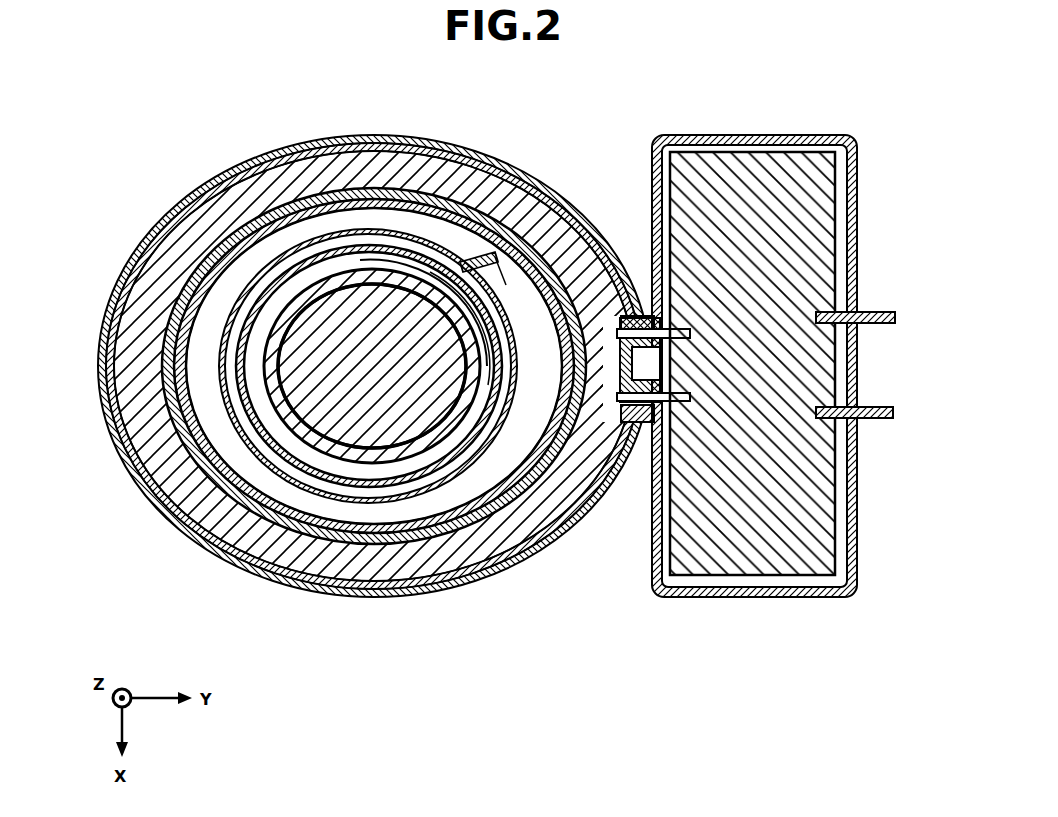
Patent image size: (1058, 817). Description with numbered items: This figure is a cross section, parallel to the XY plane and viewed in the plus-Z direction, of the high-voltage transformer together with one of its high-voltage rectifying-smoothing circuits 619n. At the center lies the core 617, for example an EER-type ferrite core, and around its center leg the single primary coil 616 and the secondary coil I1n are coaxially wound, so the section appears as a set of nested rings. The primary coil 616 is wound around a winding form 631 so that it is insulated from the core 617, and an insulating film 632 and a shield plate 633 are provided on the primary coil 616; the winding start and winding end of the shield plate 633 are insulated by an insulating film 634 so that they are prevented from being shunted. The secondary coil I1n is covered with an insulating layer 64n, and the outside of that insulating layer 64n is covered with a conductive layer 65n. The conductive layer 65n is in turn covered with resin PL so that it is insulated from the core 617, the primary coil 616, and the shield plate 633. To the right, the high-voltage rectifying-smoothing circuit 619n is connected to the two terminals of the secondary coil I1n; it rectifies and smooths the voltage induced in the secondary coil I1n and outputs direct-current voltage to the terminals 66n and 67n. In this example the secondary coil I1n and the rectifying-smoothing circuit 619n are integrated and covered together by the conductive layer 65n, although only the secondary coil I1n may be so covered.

The primary coil 616 is at (317, 337).
The core 617 is at (253, 347).
The secondary coil I1n is at (230, 210).
The resin PL is at (300, 233).
The insulating layer 64n is at (358, 147).
The conductive layer 65n is at (392, 140).
The winding form 631 is at (438, 265).
The insulating film 632 is at (477, 257).
The shield plate 633 is at (510, 250).
The insulating film 634 is at (463, 262).
The high-voltage rectifying-smoothing circuit 619n is at (750, 165).
The terminal 67n is at (897, 318).
The terminal 66n is at (895, 412).